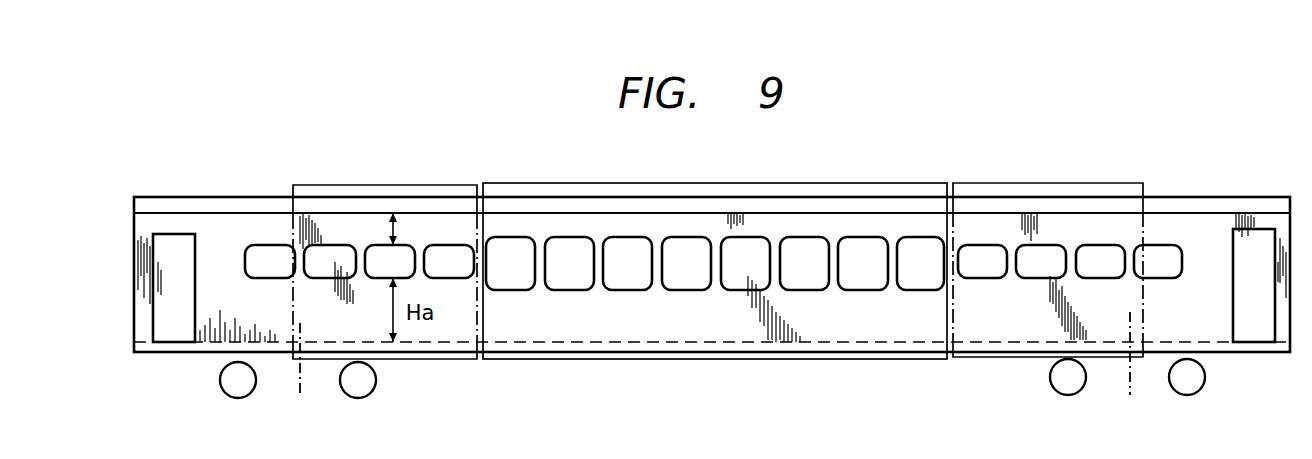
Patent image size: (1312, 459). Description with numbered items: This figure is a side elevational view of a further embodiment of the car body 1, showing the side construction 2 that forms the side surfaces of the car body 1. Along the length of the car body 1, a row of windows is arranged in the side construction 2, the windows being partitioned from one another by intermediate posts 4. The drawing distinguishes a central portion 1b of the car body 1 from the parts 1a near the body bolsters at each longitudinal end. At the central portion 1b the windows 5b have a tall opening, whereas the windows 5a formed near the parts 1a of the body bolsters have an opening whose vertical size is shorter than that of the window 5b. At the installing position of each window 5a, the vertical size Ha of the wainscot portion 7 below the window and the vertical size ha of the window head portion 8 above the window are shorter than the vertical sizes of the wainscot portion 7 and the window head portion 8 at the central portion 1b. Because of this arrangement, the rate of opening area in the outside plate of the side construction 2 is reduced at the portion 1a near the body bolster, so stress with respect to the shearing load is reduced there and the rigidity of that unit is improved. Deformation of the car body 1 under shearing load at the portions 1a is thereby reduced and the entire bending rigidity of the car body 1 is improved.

The car body 1 is at (167, 190).
The side construction 2 is at (236, 225).
The intermediate post 4 is at (877, 246).
The window 5a is at (333, 270).
The window 5b is at (690, 274).
The wainscot portion 7 is at (455, 325).
The window head portion 8 is at (370, 222).
The part near the body bolster 1a is at (450, 184).
The central portion 1b is at (590, 183).